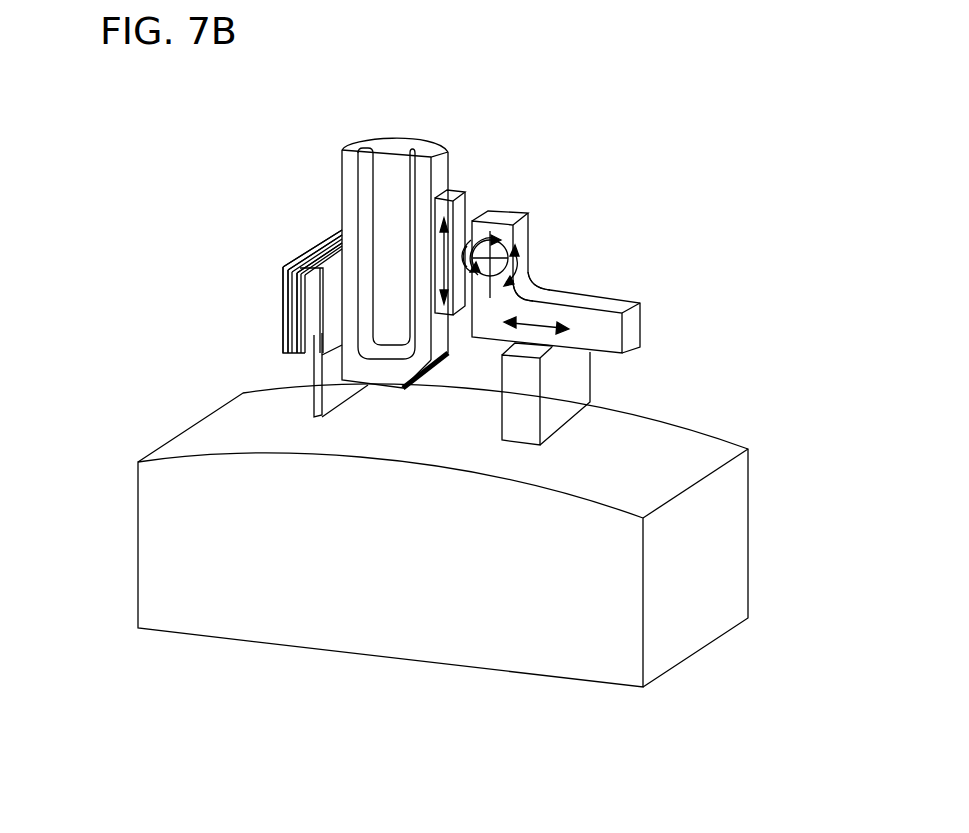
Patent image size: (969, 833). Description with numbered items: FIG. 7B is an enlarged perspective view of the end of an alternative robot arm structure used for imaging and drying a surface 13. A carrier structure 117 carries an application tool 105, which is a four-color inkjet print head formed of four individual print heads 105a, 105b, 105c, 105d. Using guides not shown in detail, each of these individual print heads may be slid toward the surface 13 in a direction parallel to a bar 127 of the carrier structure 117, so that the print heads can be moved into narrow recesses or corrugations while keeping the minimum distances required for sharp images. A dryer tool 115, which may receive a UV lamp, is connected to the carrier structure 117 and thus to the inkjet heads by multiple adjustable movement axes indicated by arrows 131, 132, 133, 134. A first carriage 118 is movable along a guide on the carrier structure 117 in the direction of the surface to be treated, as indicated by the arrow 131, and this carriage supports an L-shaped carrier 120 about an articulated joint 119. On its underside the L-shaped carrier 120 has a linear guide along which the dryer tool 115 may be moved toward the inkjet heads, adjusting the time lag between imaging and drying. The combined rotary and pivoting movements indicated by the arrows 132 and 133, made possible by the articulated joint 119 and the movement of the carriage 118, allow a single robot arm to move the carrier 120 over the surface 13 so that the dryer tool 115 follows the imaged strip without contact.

The surface 13 is at (693, 450).
The application tool 105 is at (273, 270).
The individual print head 105a is at (300, 252).
The individual print head 105b is at (293, 287).
The individual print head 105c is at (302, 352).
The individual print head 105d is at (313, 383).
The dryer tool 115 is at (565, 384).
The carrier structure 117 is at (448, 186).
The first carriage 118 is at (468, 238).
The articulated joint 119 is at (435, 298).
The L-shaped carrier 120 is at (522, 232).
The bar 127 is at (350, 171).
The arrow 131 is at (500, 237).
The arrow 132 is at (530, 296).
The arrow 133 is at (520, 266).
The arrow 134 is at (560, 332).